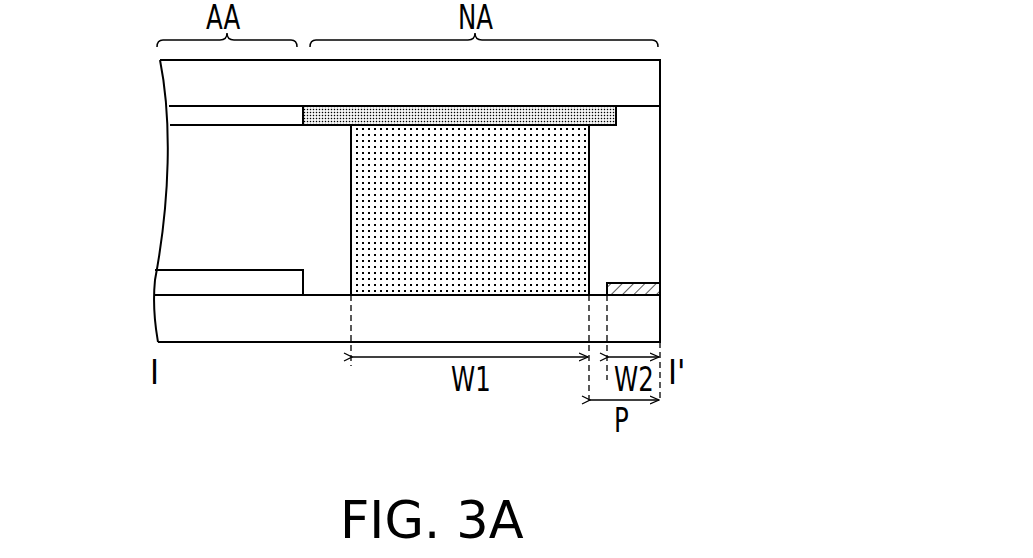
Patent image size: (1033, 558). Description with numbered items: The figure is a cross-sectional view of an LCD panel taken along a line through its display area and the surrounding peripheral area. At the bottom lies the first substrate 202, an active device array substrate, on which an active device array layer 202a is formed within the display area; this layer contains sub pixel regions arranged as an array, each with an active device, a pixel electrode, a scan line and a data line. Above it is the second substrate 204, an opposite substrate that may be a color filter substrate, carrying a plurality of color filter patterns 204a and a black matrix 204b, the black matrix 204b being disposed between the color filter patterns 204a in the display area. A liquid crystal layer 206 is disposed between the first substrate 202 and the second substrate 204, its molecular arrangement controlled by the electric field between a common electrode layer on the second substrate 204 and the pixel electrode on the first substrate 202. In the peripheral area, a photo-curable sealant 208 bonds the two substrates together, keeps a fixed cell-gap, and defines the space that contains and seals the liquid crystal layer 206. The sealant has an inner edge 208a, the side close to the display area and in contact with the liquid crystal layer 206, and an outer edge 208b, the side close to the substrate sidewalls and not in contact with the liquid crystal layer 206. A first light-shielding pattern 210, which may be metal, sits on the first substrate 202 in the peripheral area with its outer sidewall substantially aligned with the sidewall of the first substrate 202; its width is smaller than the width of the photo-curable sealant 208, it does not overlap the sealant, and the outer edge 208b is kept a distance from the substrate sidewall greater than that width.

The first substrate 202 is at (650, 322).
The active device array layer 202a is at (160, 283).
The second substrate 204 is at (647, 85).
The color filter patterns 204a is at (170, 112).
The black matrix 204b is at (603, 117).
The liquid crystal layer 206 is at (177, 215).
The photo-curable sealant 208 is at (560, 218).
The inner edge 208a is at (348, 160).
The outer edge 208b is at (592, 167).
The first light-shielding pattern 210 is at (658, 288).